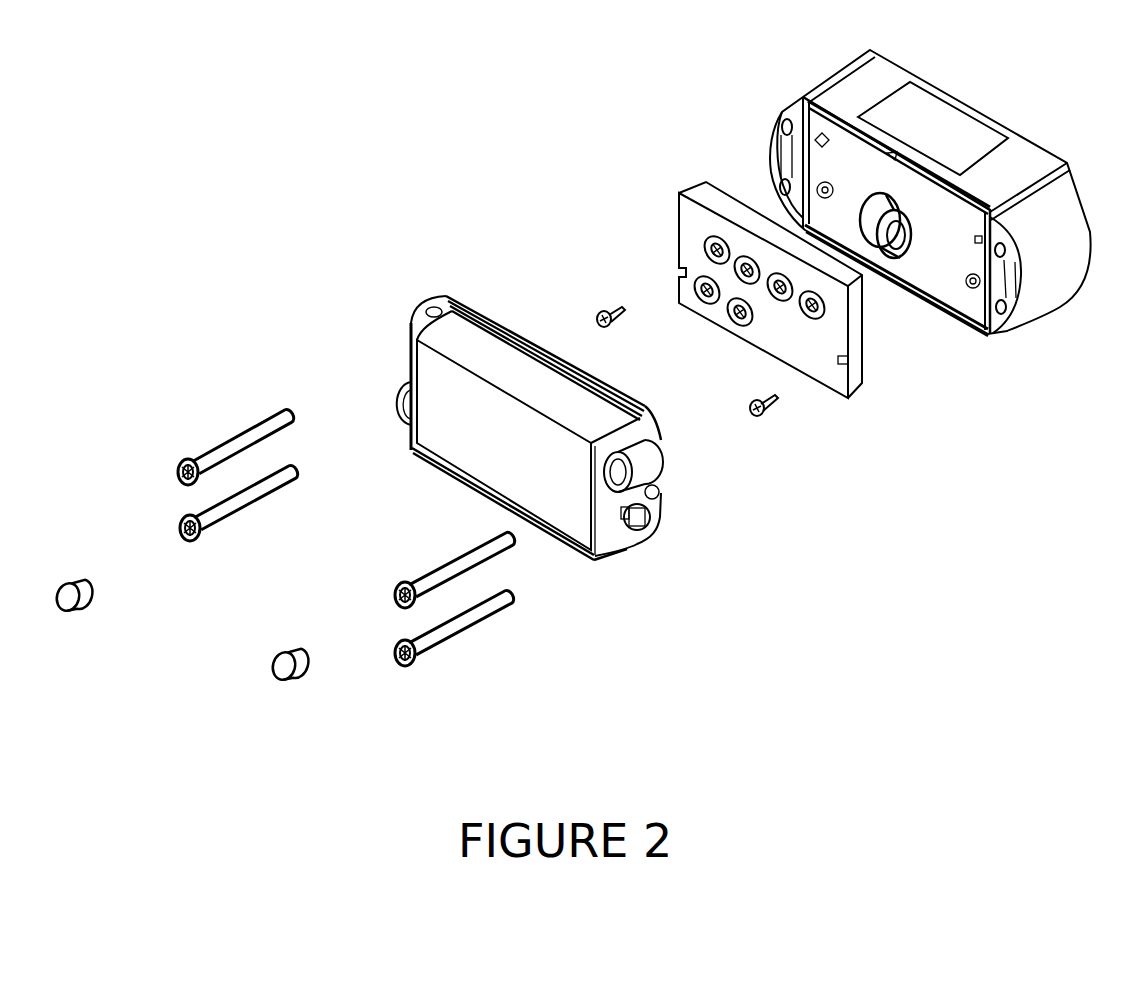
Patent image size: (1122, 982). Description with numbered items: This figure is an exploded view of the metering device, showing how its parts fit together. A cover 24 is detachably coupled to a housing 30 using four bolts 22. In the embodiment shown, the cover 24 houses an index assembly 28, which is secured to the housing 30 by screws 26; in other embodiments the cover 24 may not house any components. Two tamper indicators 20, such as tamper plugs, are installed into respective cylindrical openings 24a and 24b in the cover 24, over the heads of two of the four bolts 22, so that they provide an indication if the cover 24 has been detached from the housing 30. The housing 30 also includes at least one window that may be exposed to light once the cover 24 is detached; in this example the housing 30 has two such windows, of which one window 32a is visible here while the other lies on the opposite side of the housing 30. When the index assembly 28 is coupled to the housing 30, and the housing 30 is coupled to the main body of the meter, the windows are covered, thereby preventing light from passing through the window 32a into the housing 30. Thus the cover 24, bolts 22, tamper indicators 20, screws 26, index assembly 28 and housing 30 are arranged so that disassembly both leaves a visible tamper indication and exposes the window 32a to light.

The tamper indicators 20 is at (263, 660).
The bolts 22 is at (387, 590).
The cover 24 is at (433, 302).
The cylindrical opening 24a is at (393, 407).
The cylindrical opening 24b is at (650, 463).
The screws 26 is at (743, 395).
The index assembly 28 is at (705, 182).
The housing 30 is at (838, 65).
The window 32a is at (897, 250).